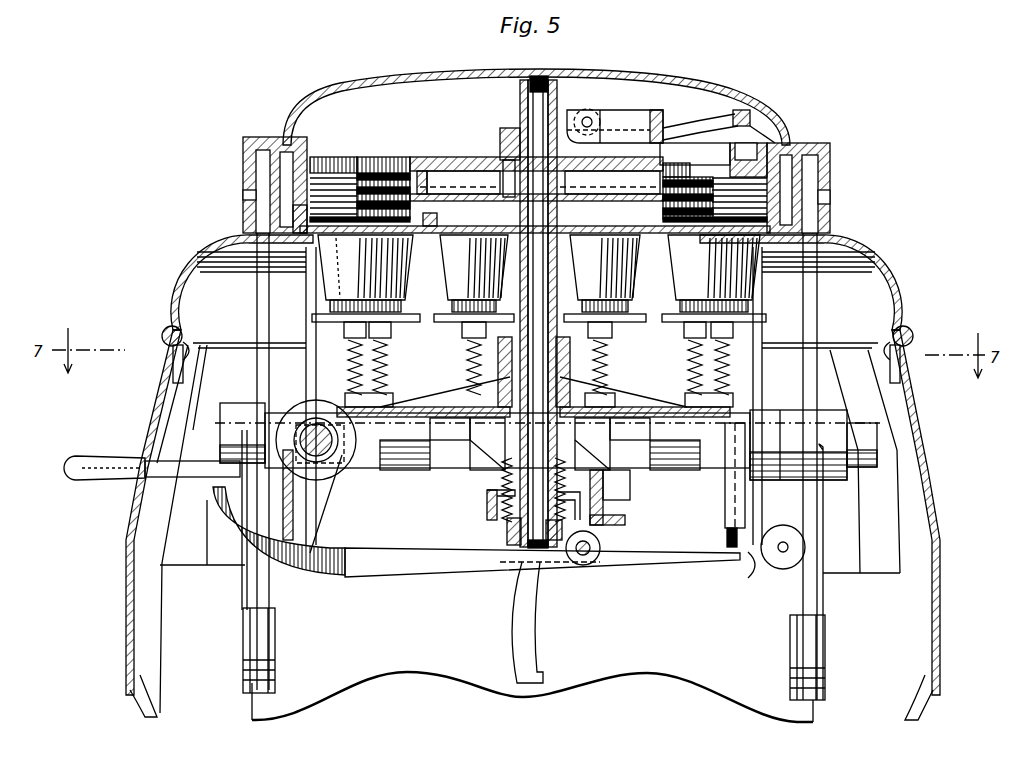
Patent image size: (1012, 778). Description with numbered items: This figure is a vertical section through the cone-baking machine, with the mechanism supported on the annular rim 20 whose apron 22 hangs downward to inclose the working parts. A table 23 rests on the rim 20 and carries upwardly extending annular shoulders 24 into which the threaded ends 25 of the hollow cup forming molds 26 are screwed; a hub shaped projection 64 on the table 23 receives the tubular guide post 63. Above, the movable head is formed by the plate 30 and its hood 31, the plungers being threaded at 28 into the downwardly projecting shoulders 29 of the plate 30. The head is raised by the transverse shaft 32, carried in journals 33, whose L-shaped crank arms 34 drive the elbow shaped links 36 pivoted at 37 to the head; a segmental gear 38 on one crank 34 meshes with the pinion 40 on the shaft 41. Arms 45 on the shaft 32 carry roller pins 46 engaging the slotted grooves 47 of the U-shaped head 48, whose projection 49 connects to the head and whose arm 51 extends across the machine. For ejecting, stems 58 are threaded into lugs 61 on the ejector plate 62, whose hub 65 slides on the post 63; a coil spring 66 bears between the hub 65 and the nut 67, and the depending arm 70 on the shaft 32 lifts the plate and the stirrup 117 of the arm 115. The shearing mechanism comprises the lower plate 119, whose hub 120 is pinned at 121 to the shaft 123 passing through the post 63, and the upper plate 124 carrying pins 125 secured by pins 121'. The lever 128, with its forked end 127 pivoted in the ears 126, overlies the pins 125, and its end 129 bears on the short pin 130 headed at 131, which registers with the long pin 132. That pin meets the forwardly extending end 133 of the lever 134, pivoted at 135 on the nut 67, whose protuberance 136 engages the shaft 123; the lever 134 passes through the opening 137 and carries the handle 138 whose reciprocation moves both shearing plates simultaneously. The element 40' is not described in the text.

The top inclosing cover or hood 31 is at (622, 76).
The annular rim 20 is at (888, 288).
The apron 22 is at (940, 489).
The pivotal connection of link to head 37 is at (243, 195).
The plate or table 23 is at (290, 216).
The elbow shaped link 36 is at (270, 623).
The upper threaded end of mold 25 is at (390, 172).
The threaded upper end of plunger 28 is at (680, 172).
The downwardly projecting annular shoulder 29 is at (648, 168).
The pin 125 is at (520, 125).
The upper shearing plate 124 is at (450, 185).
The pin 121' is at (506, 160).
The forked end of lever 127 is at (575, 120).
The upstanding ear 126 is at (600, 125).
The plate 30 is at (612, 146).
The lever 128 is at (660, 130).
The end of lever 129 is at (740, 112).
The head of pin 131 is at (763, 128).
The short pin 130 is at (790, 127).
The annular shoulder 24 is at (432, 216).
The lower shearing plate 119 is at (491, 216).
The pin 121 is at (628, 211).
The downwardly extending hub 120 is at (650, 218).
The hollow cup forming mold 26 is at (345, 278).
The hub shaped projection 64 is at (500, 296).
The slotted groove 47 is at (494, 408).
The U-shaped head 48 is at (645, 389).
The arm 45 is at (425, 408).
The roller pin 46 is at (462, 408).
The upwardly extending projection 49 is at (590, 344).
The stem 58 is at (602, 358).
The ejector plate 62 is at (650, 372).
The upstanding lug 61 is at (672, 372).
The journal 33 is at (772, 413).
The hub 65 is at (480, 470).
The tubular guide post 63 is at (496, 482).
The disc 40' is at (316, 421).
The pinion 40 is at (350, 477).
The shaft 41 is at (321, 489).
The segmental gear 38 is at (295, 511).
The handle 138 is at (102, 462).
The opening in apron 137 is at (125, 498).
The L-shaped crank arm 34 is at (235, 505).
The lever 134 is at (405, 575).
The forwardly extending end of lever 133 is at (688, 551).
The shaft 123 is at (540, 550).
The arm 115 is at (490, 515).
The coil spring 66 is at (505, 528).
The nut 67 is at (510, 543).
The protuberance 136 is at (531, 550).
The stirrup 117 is at (603, 503).
The arm 51 is at (607, 488).
The pivot of lever 135 is at (590, 548).
The shaft 32 is at (702, 478).
The long pin 132 is at (745, 560).
The depending arm 70 is at (536, 641).